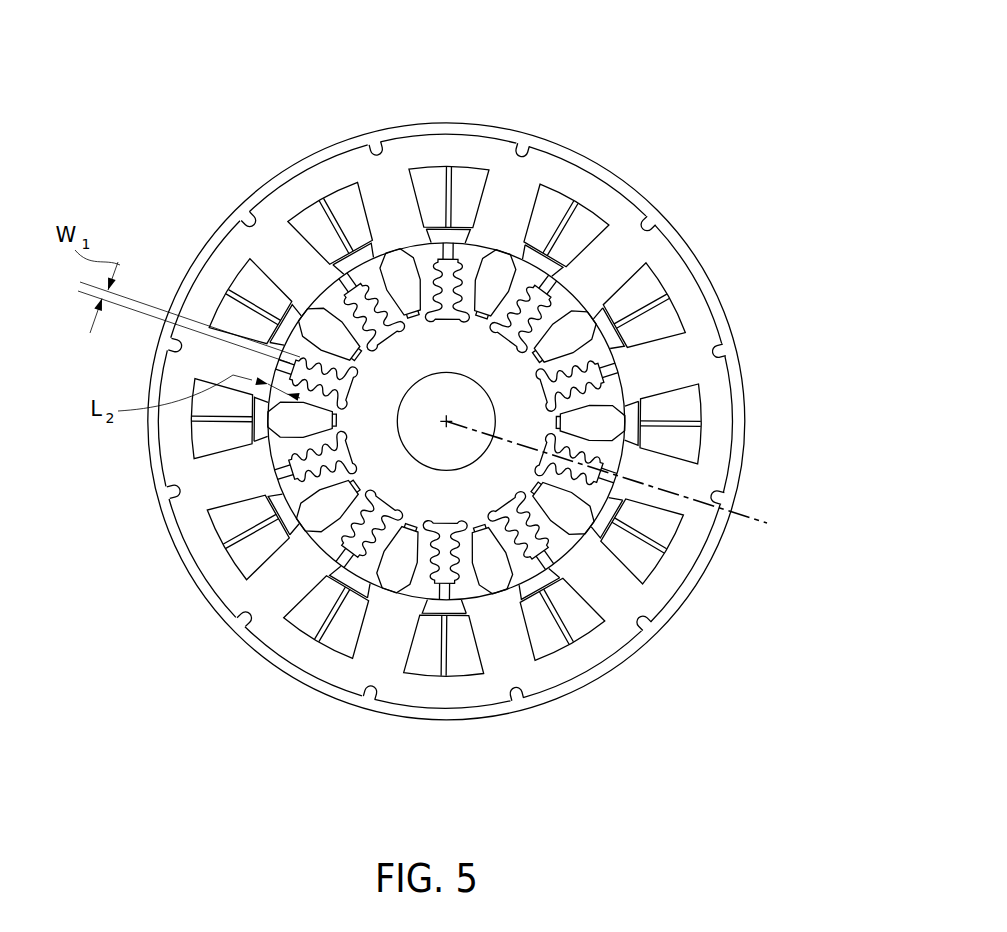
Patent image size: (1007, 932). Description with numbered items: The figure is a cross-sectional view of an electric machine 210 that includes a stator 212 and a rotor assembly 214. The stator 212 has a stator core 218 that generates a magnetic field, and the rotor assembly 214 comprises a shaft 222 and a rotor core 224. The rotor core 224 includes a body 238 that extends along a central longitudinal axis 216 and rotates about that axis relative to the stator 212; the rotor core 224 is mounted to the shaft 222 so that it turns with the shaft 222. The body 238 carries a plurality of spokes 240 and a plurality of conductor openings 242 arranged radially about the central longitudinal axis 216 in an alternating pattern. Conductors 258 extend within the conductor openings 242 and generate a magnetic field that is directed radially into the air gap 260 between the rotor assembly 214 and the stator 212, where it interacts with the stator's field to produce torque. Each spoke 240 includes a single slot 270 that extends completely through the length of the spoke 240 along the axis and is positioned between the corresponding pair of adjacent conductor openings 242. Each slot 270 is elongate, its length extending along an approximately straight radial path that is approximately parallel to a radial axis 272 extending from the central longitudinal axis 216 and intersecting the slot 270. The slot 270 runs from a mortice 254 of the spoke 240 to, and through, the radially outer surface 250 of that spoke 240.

The electric machine 210 is at (713, 74).
The stator 212 is at (618, 665).
The rotor assembly 214 is at (458, 606).
The central longitudinal axis 216 is at (445, 422).
The stator core 218 is at (617, 180).
The shaft 222 is at (430, 509).
The rotor core 224 is at (290, 342).
The body 238 is at (328, 549).
The spoke 240 is at (486, 276).
The conductor opening 242 is at (505, 262).
The radially outer surface 250 is at (440, 245).
The mortice 254 is at (518, 512).
The conductor 258 is at (493, 568).
The air gap 260 is at (613, 504).
The slot 270 is at (440, 253).
The radial axis 272 is at (758, 510).